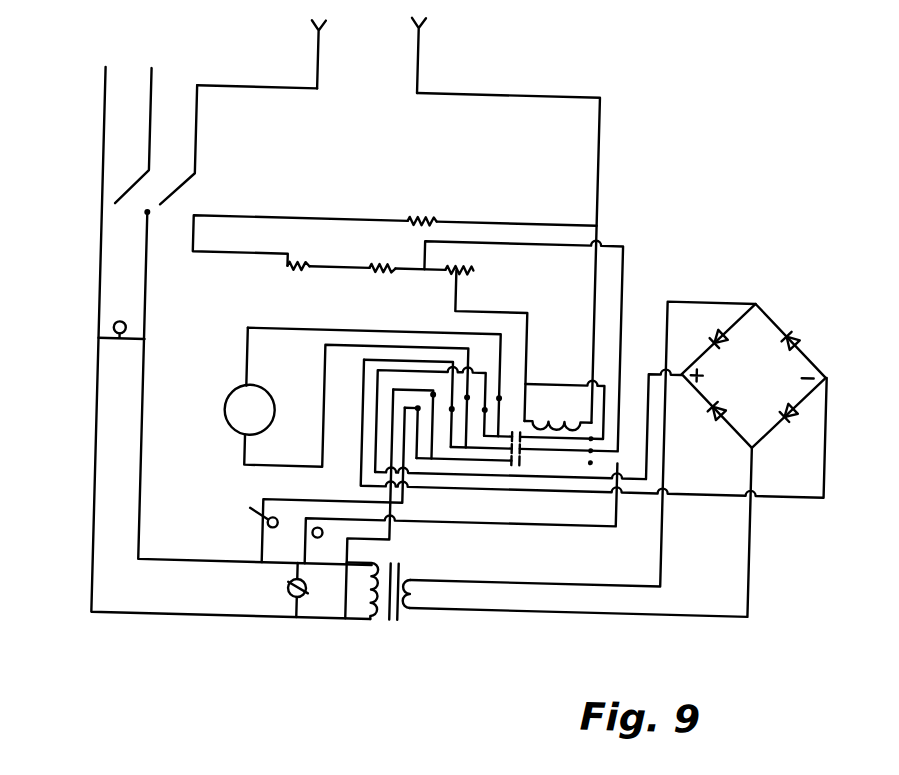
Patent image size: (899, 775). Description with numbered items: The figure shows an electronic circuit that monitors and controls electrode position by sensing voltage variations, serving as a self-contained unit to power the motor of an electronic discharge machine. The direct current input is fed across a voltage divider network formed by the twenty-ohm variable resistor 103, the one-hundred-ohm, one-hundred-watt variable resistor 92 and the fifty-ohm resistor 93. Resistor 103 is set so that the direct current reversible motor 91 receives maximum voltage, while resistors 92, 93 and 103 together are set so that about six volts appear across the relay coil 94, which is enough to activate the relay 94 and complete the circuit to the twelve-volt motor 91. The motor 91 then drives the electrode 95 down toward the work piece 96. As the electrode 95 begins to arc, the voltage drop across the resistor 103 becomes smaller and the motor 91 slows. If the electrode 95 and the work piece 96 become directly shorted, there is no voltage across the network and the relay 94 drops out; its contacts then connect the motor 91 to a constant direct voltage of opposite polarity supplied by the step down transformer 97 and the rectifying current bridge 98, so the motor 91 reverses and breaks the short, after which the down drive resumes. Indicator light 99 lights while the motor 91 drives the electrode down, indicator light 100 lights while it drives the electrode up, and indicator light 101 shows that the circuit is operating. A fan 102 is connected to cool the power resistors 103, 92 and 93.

The direct current reversible motor 91 is at (229, 430).
The variable resistor 92 is at (282, 271).
The resistor 93 is at (370, 272).
The relay coil 94 is at (553, 375).
The electrode 95 is at (306, 40).
The work piece 96 is at (415, 34).
The step down transformer 97 is at (370, 616).
The rectifying current bridge 98 is at (770, 304).
The indicator light 99 is at (262, 510).
The indicator light 100 is at (316, 540).
The indicator light 101 is at (112, 331).
The fan 102 is at (294, 602).
The variable resistor 103 is at (463, 262).